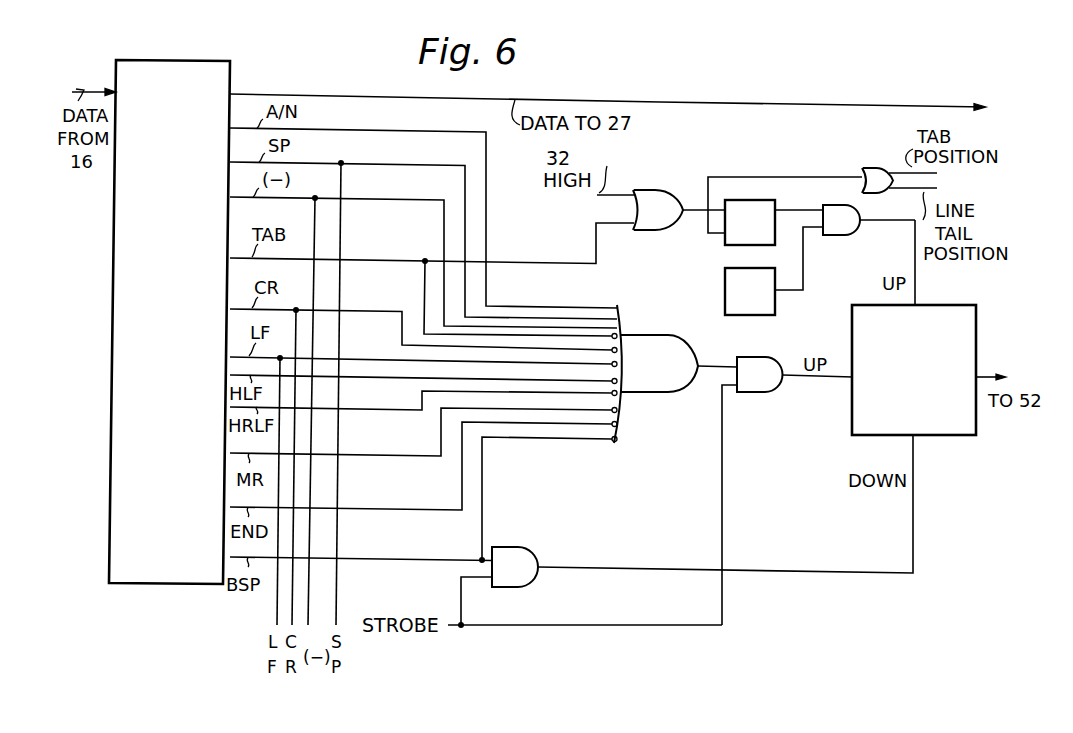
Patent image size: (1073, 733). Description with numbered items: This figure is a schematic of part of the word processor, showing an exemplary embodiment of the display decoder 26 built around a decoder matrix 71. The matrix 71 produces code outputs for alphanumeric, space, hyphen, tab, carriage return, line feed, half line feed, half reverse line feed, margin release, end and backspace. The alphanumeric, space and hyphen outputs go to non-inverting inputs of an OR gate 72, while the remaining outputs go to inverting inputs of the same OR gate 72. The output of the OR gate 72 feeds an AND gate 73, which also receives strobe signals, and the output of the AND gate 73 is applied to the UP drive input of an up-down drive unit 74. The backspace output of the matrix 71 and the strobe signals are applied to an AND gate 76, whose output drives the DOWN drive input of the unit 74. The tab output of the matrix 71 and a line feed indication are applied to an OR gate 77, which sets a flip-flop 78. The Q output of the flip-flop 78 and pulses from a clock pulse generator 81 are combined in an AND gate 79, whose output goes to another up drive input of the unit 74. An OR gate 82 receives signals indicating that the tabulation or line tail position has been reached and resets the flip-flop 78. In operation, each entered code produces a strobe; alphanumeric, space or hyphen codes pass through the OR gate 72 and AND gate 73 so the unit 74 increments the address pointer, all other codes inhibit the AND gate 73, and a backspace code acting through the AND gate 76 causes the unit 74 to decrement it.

The decoder matrix 71 is at (223, 59).
The display decoder 26 is at (689, 87).
The OR gate 77 is at (663, 190).
The flip-flop 78 is at (751, 200).
The AND gate 79 is at (840, 236).
The clock pulse generator 81 is at (725, 295).
The OR gate 82 is at (866, 168).
The up-down drive unit 74 is at (977, 313).
The OR gate 72 is at (663, 393).
The AND gate 73 is at (760, 393).
The AND gate 76 is at (538, 552).